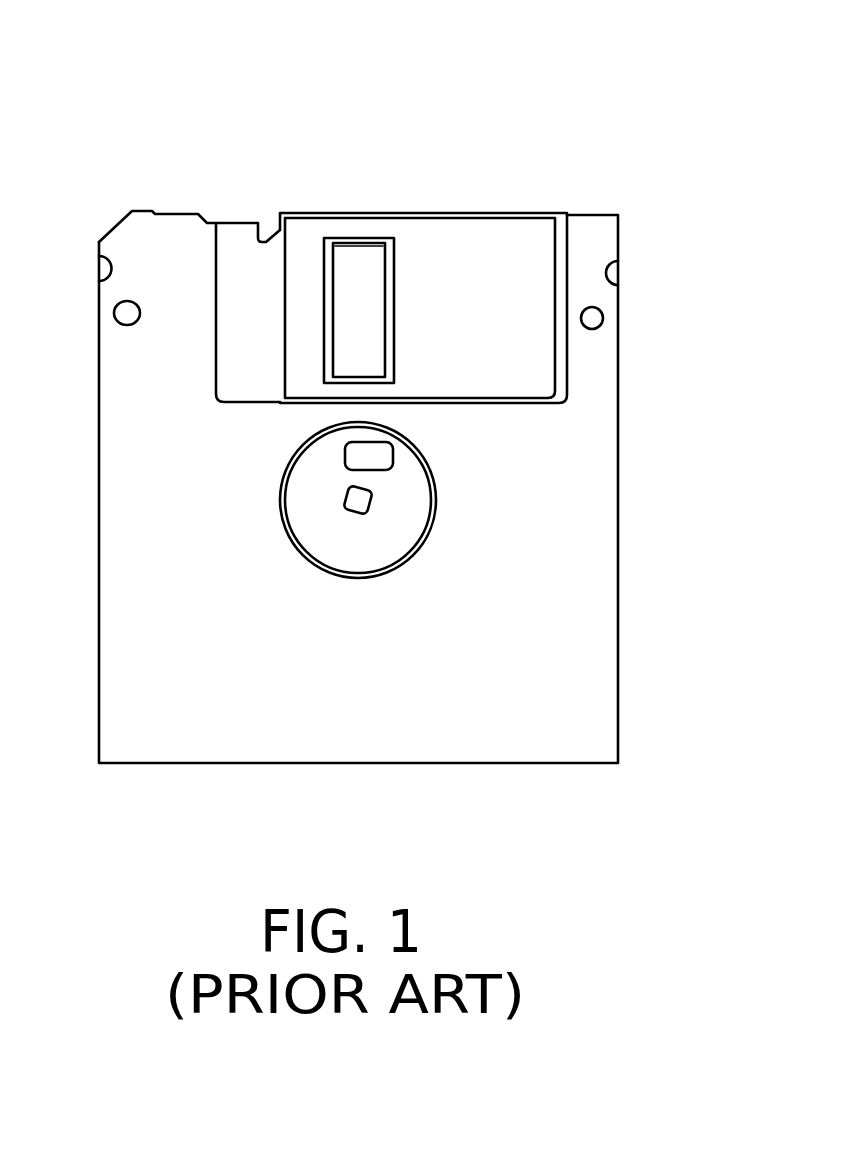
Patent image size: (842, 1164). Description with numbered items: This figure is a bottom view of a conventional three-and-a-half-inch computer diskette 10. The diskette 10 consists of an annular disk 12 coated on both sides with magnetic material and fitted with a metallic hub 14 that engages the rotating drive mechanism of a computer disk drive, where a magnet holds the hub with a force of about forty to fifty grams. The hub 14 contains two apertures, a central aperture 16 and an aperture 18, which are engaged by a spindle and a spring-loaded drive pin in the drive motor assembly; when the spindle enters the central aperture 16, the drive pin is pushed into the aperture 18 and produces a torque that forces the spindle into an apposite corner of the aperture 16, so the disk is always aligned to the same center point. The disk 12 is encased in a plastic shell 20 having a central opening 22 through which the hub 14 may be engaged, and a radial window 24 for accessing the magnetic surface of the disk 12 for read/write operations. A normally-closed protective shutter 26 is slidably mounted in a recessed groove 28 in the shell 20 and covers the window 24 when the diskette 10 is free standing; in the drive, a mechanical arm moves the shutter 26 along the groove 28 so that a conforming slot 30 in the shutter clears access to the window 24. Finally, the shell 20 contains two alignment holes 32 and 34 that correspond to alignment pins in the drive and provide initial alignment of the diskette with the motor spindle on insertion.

The computer diskette 10 is at (576, 108).
The annular disk 12 is at (347, 262).
The metallic hub 14 is at (300, 513).
The central aperture 16 is at (366, 503).
The drive pin aperture 18 is at (383, 458).
The plastic shell 20 is at (122, 452).
The central opening 22 is at (437, 502).
The radial window 24 is at (386, 268).
The protective shutter 26 is at (460, 222).
The recessed groove 28 is at (262, 335).
The conforming slot 30 is at (394, 318).
The alignment hole 32 is at (604, 318).
The alignment hole 34 is at (114, 314).